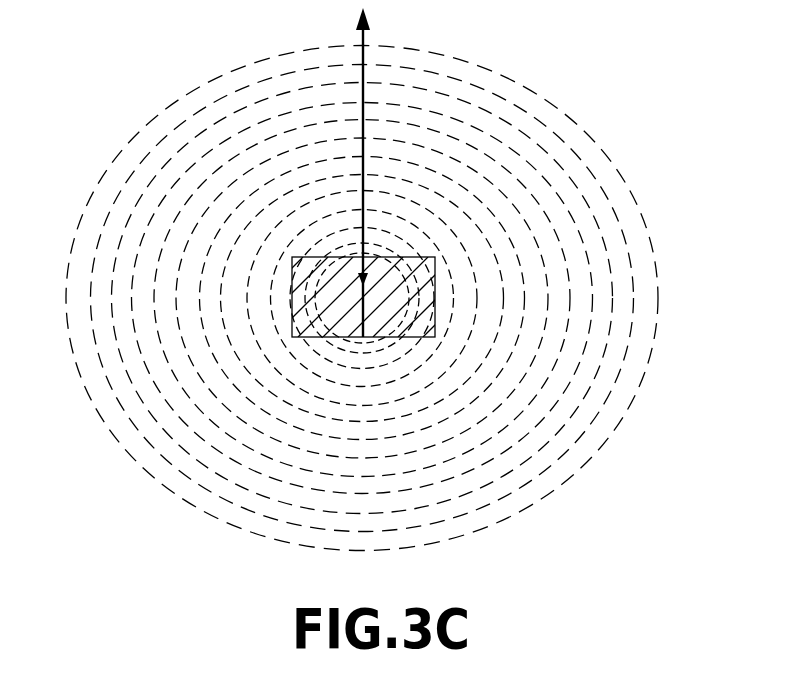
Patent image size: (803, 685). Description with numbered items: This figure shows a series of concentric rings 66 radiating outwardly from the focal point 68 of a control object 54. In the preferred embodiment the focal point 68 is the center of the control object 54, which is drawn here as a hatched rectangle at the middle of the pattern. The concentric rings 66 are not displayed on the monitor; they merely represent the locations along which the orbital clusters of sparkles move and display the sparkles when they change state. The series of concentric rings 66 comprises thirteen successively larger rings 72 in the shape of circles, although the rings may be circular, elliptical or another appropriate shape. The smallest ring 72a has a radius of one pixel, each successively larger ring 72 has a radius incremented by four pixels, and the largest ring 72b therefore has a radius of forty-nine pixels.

The series of concentric rings 66 is at (412, 287).
The control object 54 is at (292, 297).
The focal point 68 is at (370, 293).
The rings 72 is at (562, 343).
The smallest ring 72a is at (435, 312).
The largest ring 72b is at (597, 458).